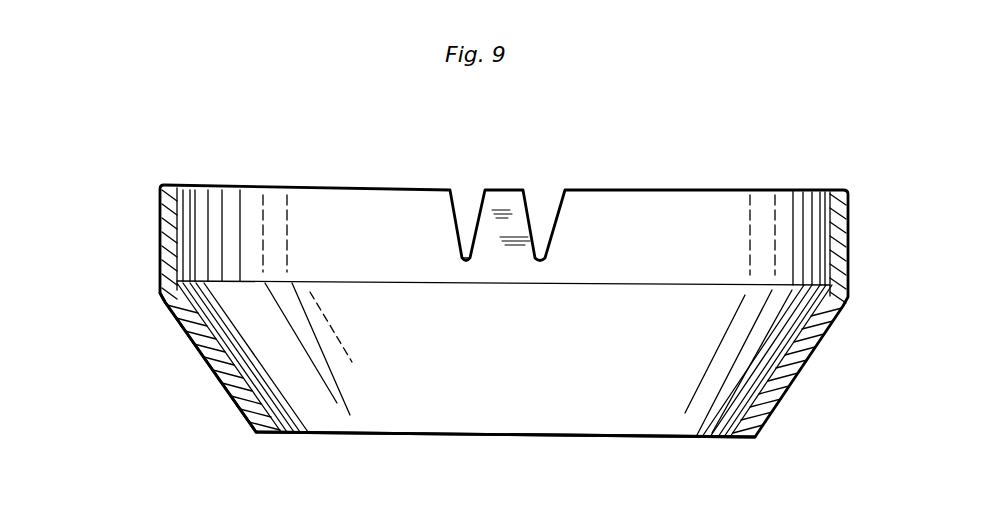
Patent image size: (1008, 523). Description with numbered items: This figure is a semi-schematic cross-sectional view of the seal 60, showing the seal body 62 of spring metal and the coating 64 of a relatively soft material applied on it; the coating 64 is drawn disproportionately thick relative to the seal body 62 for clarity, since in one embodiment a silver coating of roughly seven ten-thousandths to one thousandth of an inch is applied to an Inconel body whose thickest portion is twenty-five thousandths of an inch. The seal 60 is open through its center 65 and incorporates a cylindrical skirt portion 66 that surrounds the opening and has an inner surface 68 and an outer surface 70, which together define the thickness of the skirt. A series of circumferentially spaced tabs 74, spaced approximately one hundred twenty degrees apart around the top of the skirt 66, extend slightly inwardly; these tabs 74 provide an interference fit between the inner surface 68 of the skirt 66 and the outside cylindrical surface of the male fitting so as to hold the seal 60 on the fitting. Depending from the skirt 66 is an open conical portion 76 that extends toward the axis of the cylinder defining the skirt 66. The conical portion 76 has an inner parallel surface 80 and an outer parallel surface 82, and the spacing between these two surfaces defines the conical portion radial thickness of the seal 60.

The seal 60 is at (150, 284).
The seal body 62 is at (222, 368).
The coating 64 is at (222, 322).
The center 65 is at (432, 442).
The cylindrical skirt portion 66 is at (157, 219).
The inner surface 68 is at (187, 208).
The outer surface 70 is at (157, 250).
The tabs 74 is at (509, 181).
The conical portion 76 is at (248, 419).
The inner parallel surface 80 is at (215, 346).
The outer parallel surface 82 is at (215, 362).